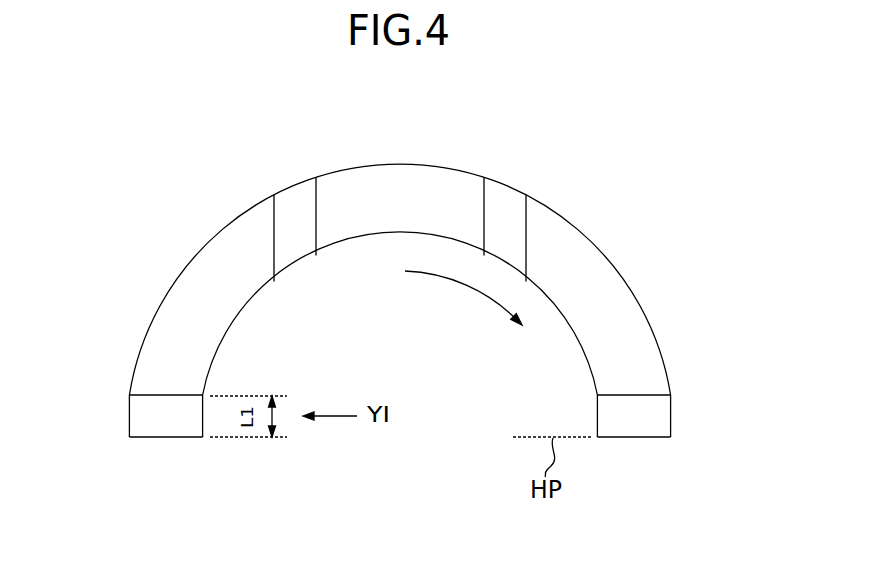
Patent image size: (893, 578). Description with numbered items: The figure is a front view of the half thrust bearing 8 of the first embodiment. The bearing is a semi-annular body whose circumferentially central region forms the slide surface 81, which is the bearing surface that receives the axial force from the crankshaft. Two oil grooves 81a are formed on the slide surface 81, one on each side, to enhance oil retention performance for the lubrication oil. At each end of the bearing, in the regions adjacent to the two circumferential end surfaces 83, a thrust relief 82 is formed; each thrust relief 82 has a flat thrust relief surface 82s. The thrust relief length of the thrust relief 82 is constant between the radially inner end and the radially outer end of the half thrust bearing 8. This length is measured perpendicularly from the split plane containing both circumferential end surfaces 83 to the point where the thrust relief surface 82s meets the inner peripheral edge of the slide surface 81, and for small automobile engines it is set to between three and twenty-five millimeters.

The half thrust bearing 8 is at (603, 190).
The slide surface 81 is at (210, 260).
The oil groove 81a is at (293, 200).
The thrust relief 82 is at (117, 392).
The thrust relief surface 82s is at (135, 417).
The circumferential end surface 83 is at (145, 438).